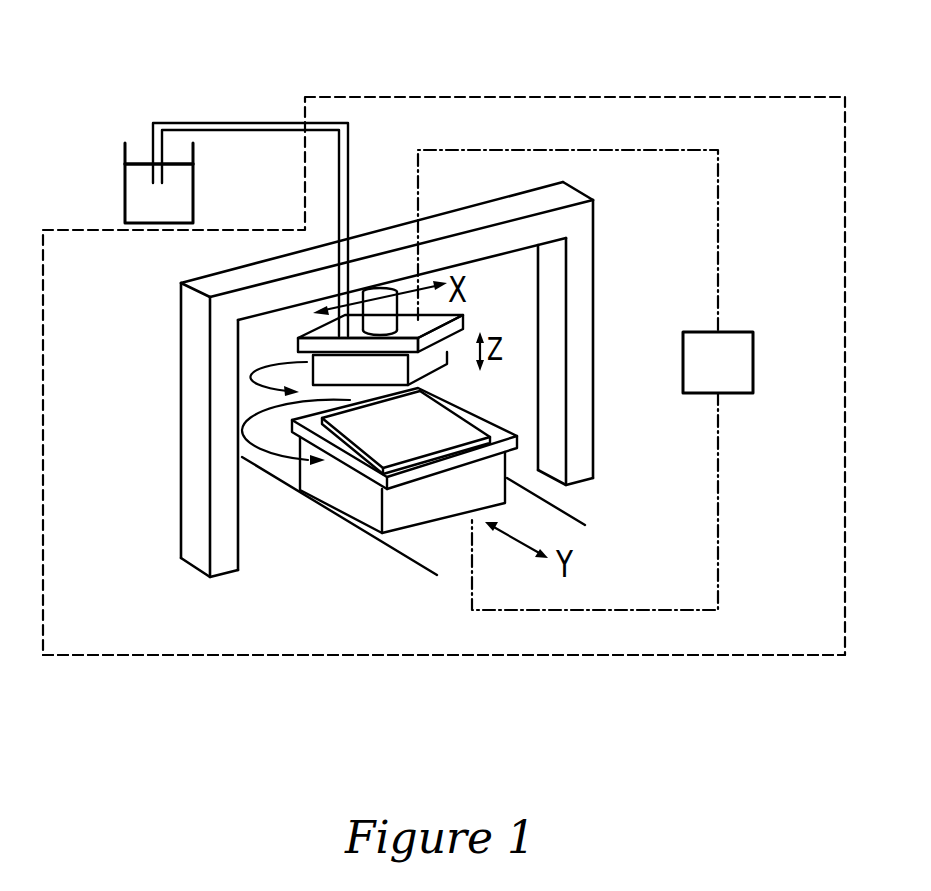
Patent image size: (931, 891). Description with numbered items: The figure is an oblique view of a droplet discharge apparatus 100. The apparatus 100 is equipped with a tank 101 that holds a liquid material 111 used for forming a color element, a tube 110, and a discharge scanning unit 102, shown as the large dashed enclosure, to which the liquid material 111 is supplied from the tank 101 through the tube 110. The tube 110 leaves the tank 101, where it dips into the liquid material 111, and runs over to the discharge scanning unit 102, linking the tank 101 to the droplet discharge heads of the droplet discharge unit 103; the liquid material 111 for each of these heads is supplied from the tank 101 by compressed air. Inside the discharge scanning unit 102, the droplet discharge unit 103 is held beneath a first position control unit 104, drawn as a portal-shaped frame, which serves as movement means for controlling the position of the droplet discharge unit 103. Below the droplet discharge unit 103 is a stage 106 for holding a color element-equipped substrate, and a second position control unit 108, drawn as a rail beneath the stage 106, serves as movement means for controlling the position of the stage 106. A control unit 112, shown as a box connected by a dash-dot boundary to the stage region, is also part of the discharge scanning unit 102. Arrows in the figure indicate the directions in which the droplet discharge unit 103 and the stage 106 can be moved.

The droplet discharge apparatus 100 is at (707, 79).
The tank 101 is at (125, 183).
The discharge scanning unit 102 is at (418, 655).
The droplet discharge unit 103 is at (453, 341).
The first position control unit 104 is at (197, 475).
The stage 106 is at (370, 517).
The second position control unit 108 is at (433, 565).
The tube 110 is at (257, 121).
The liquid material 111 is at (177, 202).
The control unit 112 is at (753, 360).